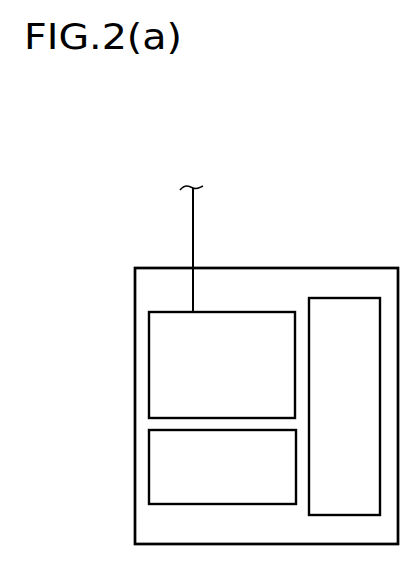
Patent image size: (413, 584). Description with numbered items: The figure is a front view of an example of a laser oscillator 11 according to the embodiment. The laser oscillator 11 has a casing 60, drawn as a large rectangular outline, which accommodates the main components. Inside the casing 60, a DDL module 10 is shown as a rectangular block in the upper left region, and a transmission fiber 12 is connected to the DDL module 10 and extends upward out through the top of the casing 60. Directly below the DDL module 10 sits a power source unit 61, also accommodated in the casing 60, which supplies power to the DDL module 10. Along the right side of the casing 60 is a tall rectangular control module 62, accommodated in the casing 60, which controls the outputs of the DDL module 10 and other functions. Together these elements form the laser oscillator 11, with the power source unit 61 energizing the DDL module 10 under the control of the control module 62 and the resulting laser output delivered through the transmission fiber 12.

The laser oscillator 11 is at (323, 140).
The casing 60 is at (308, 268).
The transmission fiber 12 is at (193, 222).
The DDL module 10 is at (157, 367).
The power source unit 61 is at (158, 466).
The control module 62 is at (353, 300).